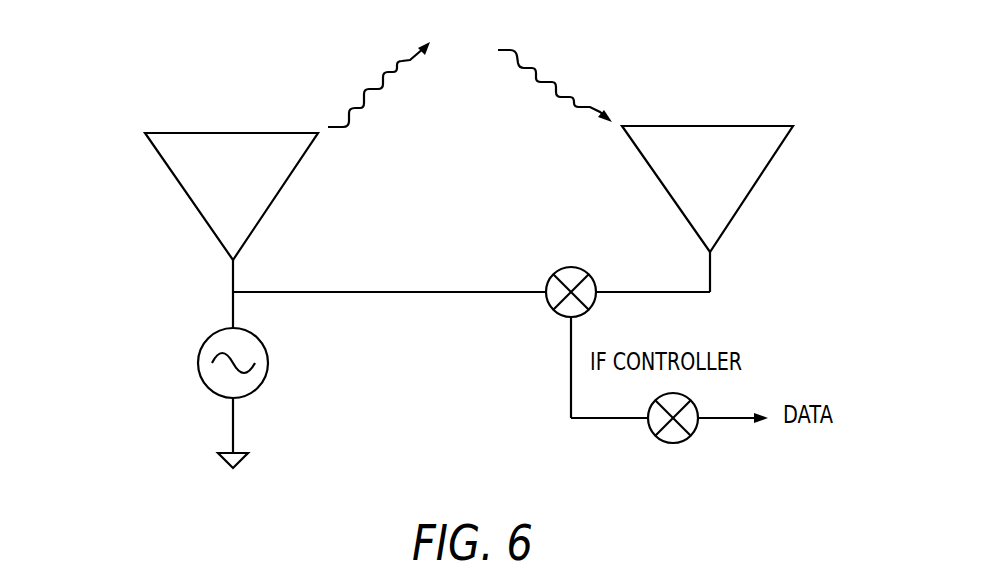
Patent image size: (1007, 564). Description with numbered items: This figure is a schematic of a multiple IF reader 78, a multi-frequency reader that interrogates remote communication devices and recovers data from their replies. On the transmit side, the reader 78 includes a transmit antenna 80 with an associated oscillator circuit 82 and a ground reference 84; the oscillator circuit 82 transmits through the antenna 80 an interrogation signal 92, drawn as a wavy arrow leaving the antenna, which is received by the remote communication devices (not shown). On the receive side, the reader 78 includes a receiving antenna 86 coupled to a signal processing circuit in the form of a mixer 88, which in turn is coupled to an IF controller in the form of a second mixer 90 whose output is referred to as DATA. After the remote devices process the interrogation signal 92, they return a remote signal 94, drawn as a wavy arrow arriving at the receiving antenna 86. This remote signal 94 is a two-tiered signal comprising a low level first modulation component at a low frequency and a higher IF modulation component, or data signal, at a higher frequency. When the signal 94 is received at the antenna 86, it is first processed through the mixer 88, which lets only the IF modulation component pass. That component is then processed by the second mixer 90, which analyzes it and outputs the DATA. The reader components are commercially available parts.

The multiple IF reader 78 is at (454, 190).
The transmit antenna 80 is at (277, 195).
The oscillator circuit 82 is at (268, 360).
The ground reference 84 is at (245, 462).
The receiving antenna 86 is at (753, 188).
The mixer 88 is at (571, 266).
The second mixer 90 is at (672, 442).
The interrogation signal 92 is at (380, 96).
The remote signal 94 is at (549, 65).